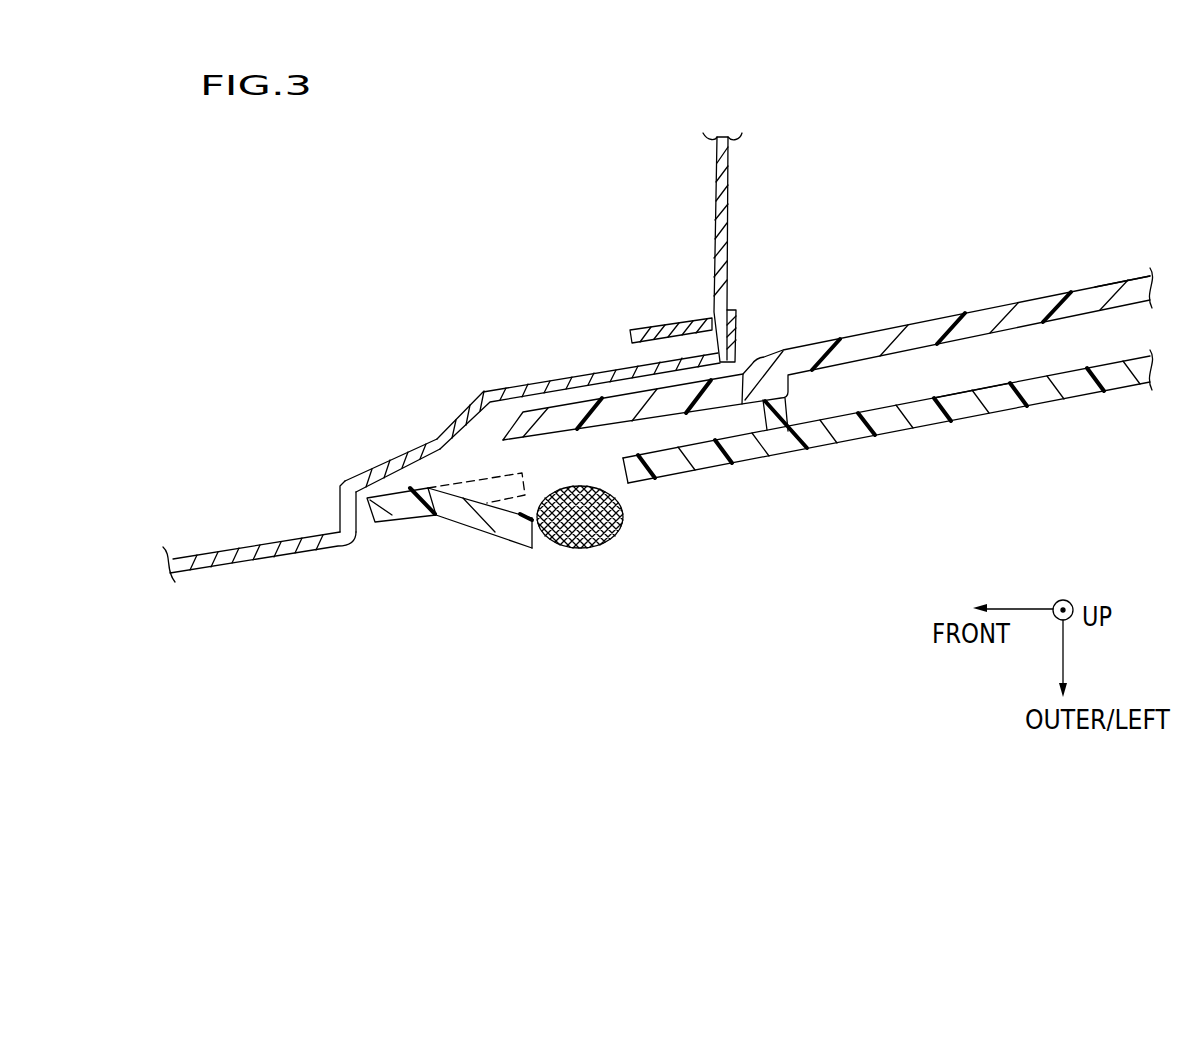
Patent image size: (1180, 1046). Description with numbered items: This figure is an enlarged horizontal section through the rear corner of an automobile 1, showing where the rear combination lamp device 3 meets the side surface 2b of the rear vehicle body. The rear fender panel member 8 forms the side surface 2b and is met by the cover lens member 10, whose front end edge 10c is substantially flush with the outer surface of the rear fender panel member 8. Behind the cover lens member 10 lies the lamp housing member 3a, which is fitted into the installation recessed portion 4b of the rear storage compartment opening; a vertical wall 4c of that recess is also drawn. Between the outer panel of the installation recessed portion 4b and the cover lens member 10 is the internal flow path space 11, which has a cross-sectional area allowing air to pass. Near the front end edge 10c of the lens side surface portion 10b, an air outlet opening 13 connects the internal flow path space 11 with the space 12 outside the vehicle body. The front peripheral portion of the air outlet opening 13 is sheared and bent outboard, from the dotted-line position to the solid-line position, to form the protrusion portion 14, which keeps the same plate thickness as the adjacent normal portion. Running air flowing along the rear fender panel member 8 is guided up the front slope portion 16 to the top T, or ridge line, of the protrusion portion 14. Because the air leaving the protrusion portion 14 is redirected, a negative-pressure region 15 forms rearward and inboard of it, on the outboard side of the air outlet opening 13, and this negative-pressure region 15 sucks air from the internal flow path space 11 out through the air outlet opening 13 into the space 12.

The automobile 1 is at (578, 239).
The side surface 2b is at (297, 562).
The rear combination lamp device 3 is at (1006, 284).
The lamp housing member 3a is at (1138, 278).
The installation recessed portion 4b is at (409, 465).
The vertical wall of panel 4c is at (356, 522).
The rear fender panel member 8 is at (185, 575).
The cover lens member 10 is at (1133, 399).
The lens side surface portion 10b is at (965, 413).
The front end edge 10c is at (377, 525).
The internal flow path space 11 is at (540, 456).
The space outside of the vehicle body 12 is at (652, 596).
The air outlet opening 13 is at (627, 473).
The protrusion portion 14 is at (548, 555).
The negative-pressure region 15 is at (630, 528).
The front slope portion 16 is at (462, 528).
The top T is at (537, 550).